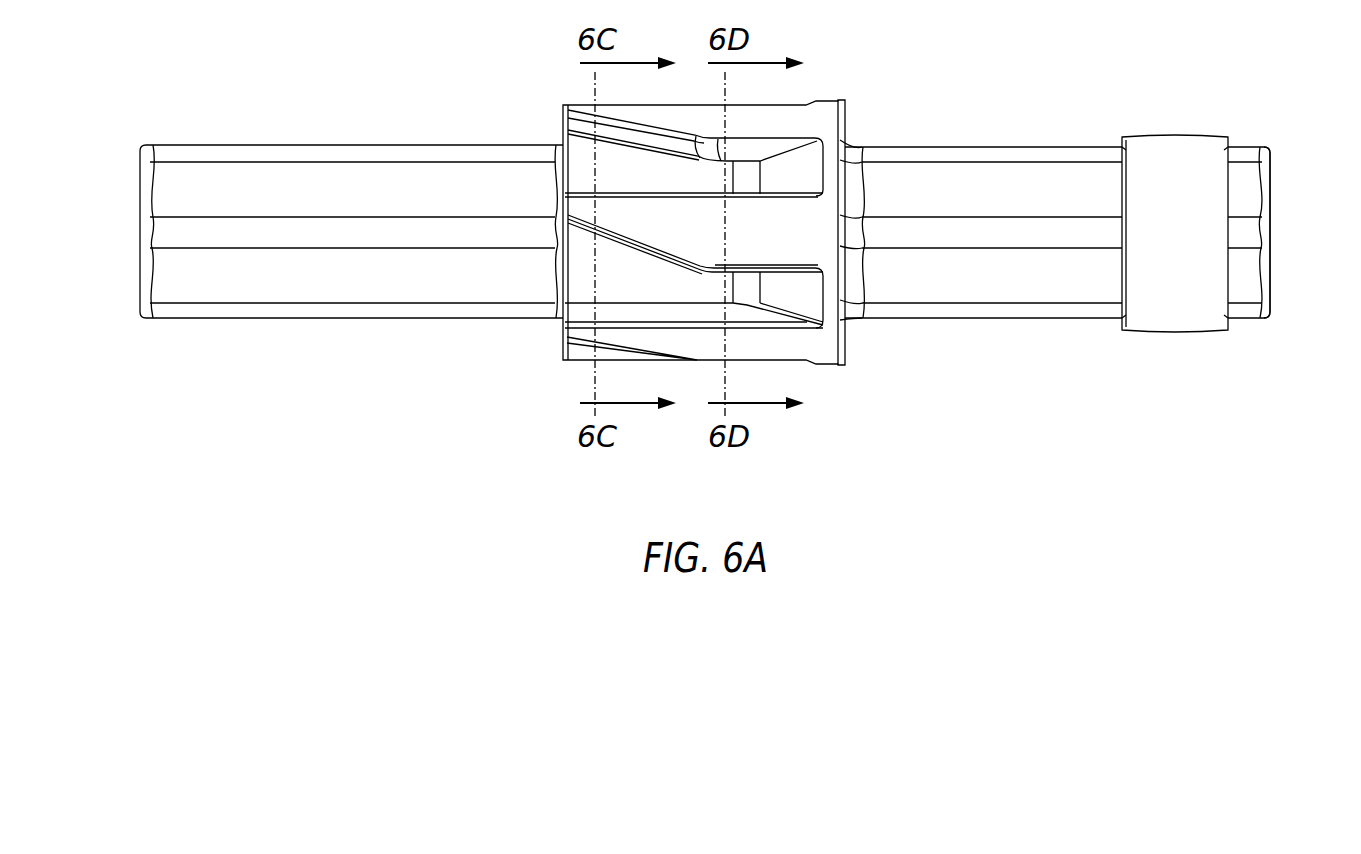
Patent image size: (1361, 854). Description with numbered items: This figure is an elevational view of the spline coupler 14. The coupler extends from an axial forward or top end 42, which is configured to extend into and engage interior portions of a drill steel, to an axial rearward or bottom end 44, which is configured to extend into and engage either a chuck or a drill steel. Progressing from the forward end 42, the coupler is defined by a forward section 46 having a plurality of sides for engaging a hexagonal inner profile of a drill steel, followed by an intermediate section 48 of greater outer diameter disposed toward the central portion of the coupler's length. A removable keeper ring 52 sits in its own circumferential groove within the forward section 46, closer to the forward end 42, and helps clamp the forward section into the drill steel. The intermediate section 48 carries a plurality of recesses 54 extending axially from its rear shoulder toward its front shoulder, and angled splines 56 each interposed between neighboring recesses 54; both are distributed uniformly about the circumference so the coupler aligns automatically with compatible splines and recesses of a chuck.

The spline coupler 14 is at (320, 74).
The forward end 42 is at (1270, 149).
The rearward end 44 is at (139, 173).
The forward section 46 is at (1270, 330).
The intermediate section 48 is at (838, 100).
The keeper ring 52 is at (1175, 150).
The recesses 54 is at (592, 168).
The angled splines 56 is at (695, 123).